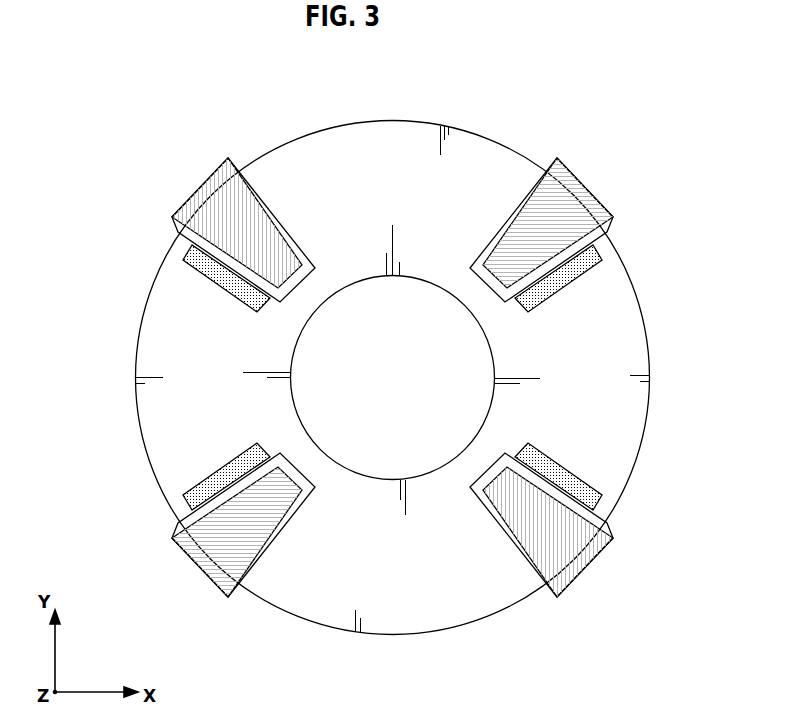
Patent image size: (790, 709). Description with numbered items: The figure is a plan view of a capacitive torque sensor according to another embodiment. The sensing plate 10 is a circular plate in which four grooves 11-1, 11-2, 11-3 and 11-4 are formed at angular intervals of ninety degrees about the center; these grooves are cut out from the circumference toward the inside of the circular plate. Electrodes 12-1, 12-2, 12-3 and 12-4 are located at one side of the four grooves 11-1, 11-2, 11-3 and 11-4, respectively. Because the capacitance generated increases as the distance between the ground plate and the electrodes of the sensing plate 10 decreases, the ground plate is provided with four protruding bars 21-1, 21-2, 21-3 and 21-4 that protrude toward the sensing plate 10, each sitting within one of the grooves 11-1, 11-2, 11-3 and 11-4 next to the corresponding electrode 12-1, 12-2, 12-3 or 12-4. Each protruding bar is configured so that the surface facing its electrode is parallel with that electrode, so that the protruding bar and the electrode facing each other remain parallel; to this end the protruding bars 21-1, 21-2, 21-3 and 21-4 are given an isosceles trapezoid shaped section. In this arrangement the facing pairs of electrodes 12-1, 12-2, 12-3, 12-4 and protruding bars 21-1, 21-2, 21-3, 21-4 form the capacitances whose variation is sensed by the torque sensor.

The sensing plate 10 is at (380, 145).
The groove 11-1 is at (249, 166).
The groove 11-2 is at (250, 588).
The groove 11-3 is at (540, 606).
The groove 11-4 is at (540, 160).
The protruding bar 21-1 is at (213, 187).
The protruding bar 21-2 is at (212, 553).
The protruding bar 21-3 is at (575, 562).
The protruding bar 21-4 is at (580, 190).
The electrode 12-1 is at (225, 280).
The electrode 12-2 is at (248, 480).
The electrode 12-3 is at (558, 476).
The electrode 12-4 is at (552, 287).